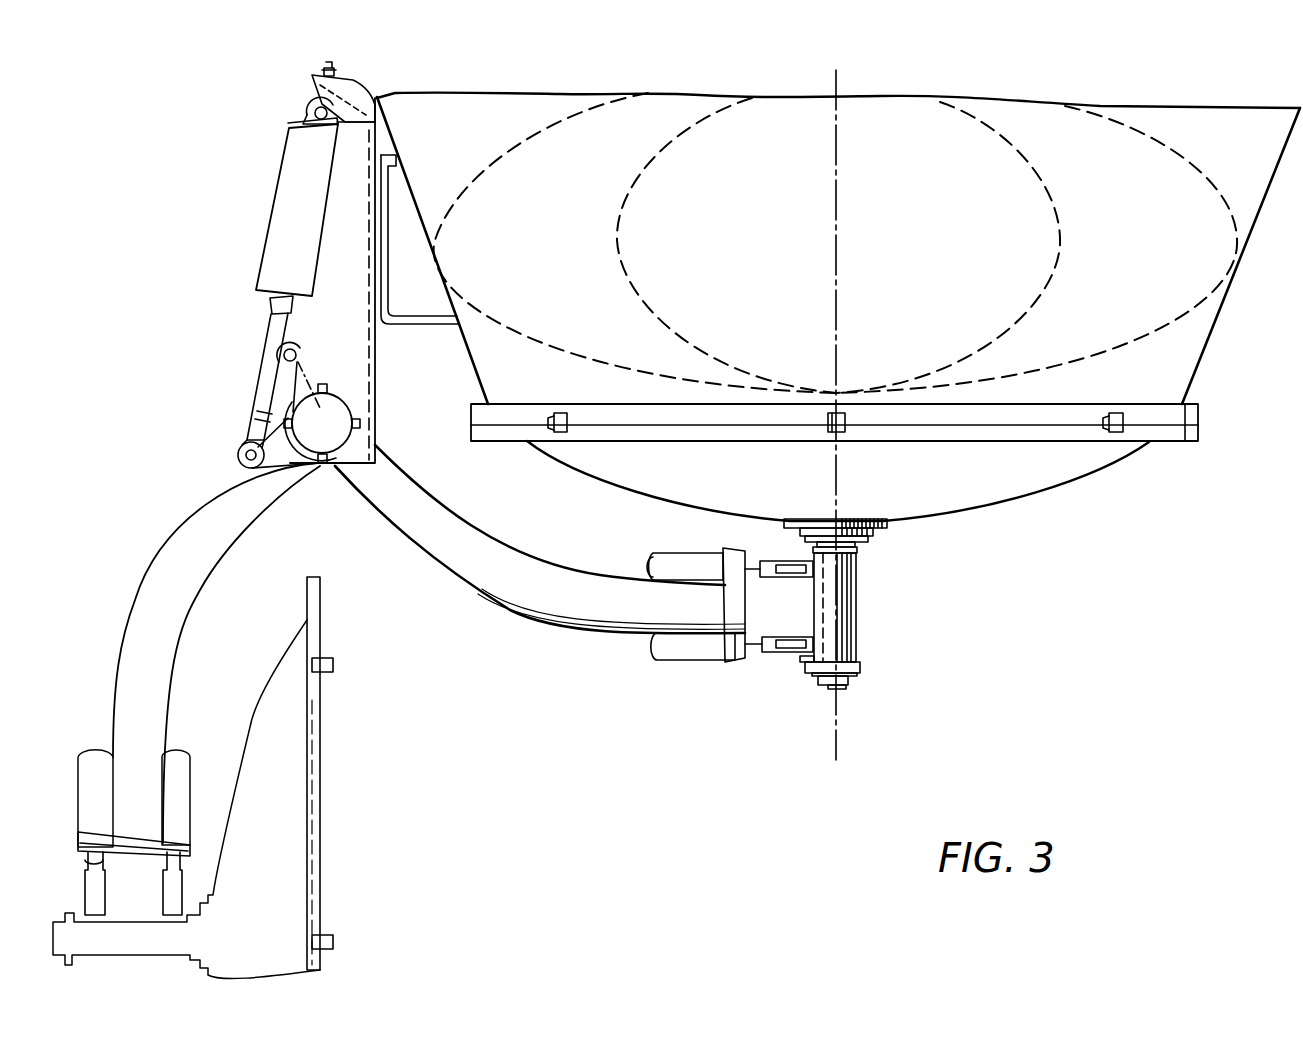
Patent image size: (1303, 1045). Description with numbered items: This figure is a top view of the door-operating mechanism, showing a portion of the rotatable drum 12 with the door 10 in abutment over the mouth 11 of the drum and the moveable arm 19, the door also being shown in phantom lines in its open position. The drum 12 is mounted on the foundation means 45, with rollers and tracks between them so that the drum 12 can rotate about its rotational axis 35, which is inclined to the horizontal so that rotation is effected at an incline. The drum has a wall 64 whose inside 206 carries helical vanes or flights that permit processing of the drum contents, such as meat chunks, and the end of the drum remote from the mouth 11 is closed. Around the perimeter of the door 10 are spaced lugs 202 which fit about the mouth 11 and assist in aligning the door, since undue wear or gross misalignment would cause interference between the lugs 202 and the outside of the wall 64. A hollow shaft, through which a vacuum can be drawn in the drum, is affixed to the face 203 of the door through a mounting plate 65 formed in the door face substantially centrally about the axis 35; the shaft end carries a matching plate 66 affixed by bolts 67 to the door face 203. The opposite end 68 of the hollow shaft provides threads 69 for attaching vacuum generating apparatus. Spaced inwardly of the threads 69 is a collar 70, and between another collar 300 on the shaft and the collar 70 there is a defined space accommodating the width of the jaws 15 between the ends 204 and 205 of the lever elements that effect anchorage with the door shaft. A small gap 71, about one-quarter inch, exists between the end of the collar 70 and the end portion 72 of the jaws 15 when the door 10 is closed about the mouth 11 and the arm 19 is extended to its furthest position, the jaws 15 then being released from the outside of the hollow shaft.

The door 10 is at (967, 478).
The mouth 11 is at (1195, 400).
The rotatable drum 12 is at (752, 257).
The jaws 15 is at (803, 598).
The arm 19 is at (510, 618).
The rotational axis 35 is at (836, 180).
The foundation means 45 is at (410, 325).
The wall 64 is at (1218, 320).
The mounting plate 65 is at (888, 523).
The matching plate 66 is at (875, 534).
The bolts 67 is at (858, 545).
The opposite end 68 is at (862, 686).
The threads 69 is at (830, 676).
The collar 70 is at (862, 667).
The gap 71 is at (797, 664).
The end portion 72 is at (843, 688).
The lugs 202 is at (555, 412).
The face 203 is at (1058, 490).
The end 204 is at (860, 557).
The end 205 is at (866, 653).
The inside 206 is at (422, 197).
The collar 300 is at (730, 592).